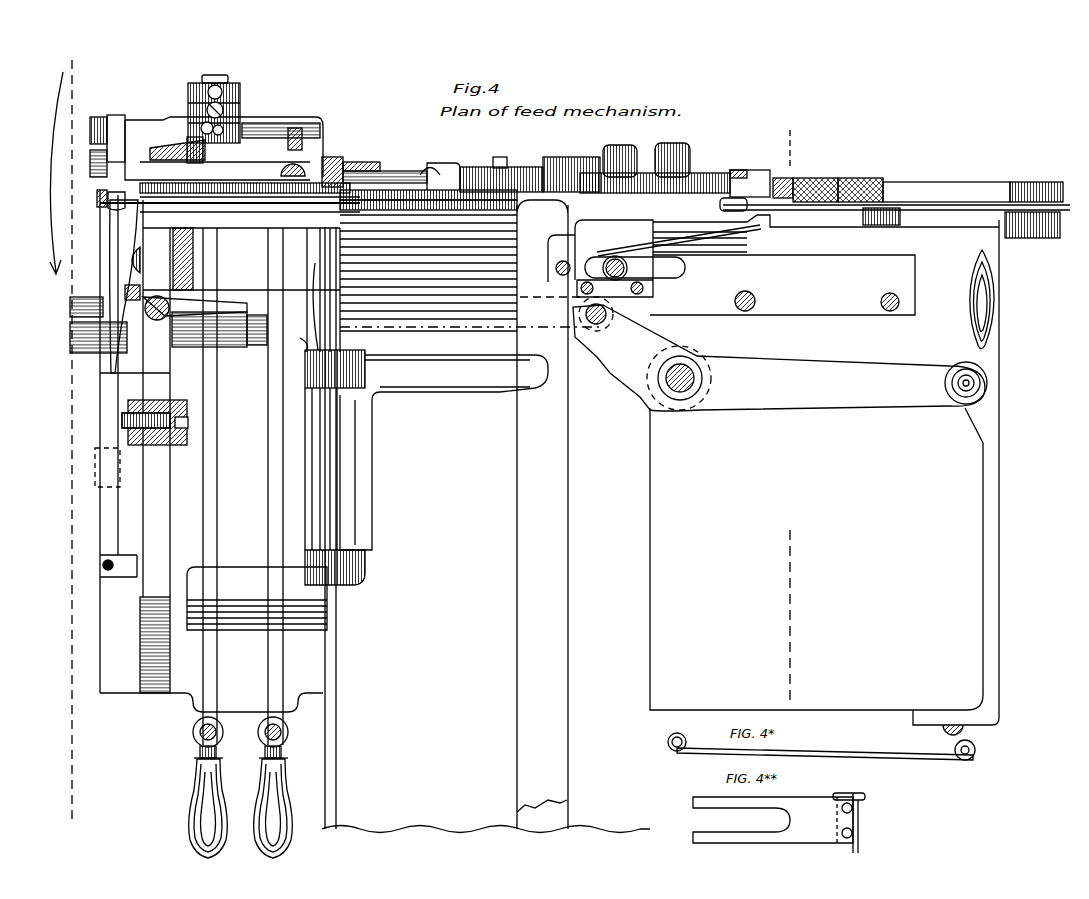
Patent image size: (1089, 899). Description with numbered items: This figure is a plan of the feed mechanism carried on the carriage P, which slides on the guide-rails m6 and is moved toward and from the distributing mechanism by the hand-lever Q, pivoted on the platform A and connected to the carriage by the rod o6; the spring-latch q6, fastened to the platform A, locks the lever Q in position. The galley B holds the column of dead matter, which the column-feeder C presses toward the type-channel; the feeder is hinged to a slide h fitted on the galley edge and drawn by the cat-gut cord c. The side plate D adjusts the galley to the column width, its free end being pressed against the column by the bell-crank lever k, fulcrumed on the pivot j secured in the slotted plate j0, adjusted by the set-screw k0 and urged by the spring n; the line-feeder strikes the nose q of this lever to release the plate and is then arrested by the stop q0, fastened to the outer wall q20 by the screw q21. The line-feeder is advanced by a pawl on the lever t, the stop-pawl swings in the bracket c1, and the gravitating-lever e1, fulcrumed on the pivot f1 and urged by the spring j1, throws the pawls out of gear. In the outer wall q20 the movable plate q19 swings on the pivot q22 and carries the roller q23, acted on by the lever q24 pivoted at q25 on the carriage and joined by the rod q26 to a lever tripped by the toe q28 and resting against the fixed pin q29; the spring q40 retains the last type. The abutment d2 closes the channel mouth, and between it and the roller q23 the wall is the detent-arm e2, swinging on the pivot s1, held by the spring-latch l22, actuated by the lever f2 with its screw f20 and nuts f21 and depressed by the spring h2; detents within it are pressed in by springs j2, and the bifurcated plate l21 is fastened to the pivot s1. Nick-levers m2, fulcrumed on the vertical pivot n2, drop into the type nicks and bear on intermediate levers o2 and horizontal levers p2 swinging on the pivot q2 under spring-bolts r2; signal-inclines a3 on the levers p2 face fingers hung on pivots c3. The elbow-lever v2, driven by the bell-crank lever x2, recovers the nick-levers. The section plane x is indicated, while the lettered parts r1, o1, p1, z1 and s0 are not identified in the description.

In FIG. 4, the bell-crank lever x2 is at (66, 429).
In FIG. 4, the pivots c3 is at (106, 128).
In FIG. 4, the inclined plane a3 is at (91, 163).
In FIG. 4, the detent-arm e2 is at (230, 160).
In FIG. 4, the slide r1 is at (281, 141).
In FIG. 4, the springs j2 is at (166, 144).
In FIG. 4, the spring-latch l22 is at (297, 128).
In FIG. 4, the pivot s1 is at (293, 166).
The pivot s1 is at (849, 787).
In FIG. 4, the screw f20 is at (215, 76).
In FIG. 4, the nuts f21 is at (230, 84).
In FIG. 4, the spring j1 is at (208, 110).
In FIG. 4, the spring q40 is at (322, 200).
In FIG. 4, the abutment d2 is at (116, 190).
In FIG. 4, the vertical pivot n2 is at (117, 201).
In FIG. 4, the carriage P is at (240, 446).
In FIG. 4, the nick-levers m2 is at (121, 286).
In FIG. 4, the elbow-lever v2 is at (141, 273).
In FIG. 4, the cylinder o1 is at (81, 307).
In FIG. 4, the intermediate levers o2 is at (92, 337).
In FIG. 4, the bar p1 is at (206, 321).
In FIG. 4, the lever f2 is at (206, 486).
In FIG. 4, the rod z1 is at (455, 437).
In FIG. 4, the spring-bolts r2 is at (159, 423).
In FIG. 4, the horizontal levers p2 is at (116, 512).
In FIG. 4, the vertical pivot q2 is at (98, 566).
In FIG. 4, the spring h2 is at (232, 787).
In FIG. 4, the galley B is at (486, 530).
In FIG. 4, the side plate D is at (542, 514).
In FIG. 4, the slide h is at (333, 406).
In FIG. 4, the column-feeder C is at (444, 452).
In FIG. 4, the set-screw k0 is at (292, 360).
In FIG. 4, the cat-gut cord c is at (302, 345).
In FIG. 4, the rod o6 is at (292, 302).
In FIG. 4, the pivot q25 is at (334, 157).
In FIG. 4, the roller q23 is at (352, 162).
The roller q23 is at (681, 735).
In FIG. 4, the lever q24 is at (385, 164).
In FIG. 4, the rod q26 is at (390, 160).
In FIG. 4, the outer wall q20 is at (370, 170).
In FIG. 4, the movable plate q19 is at (400, 172).
The movable plate q19 is at (825, 749).
In FIG. 4, the pivot f1 is at (430, 156).
In FIG. 4, the bracket c1 is at (443, 172).
In FIG. 4, the gravitating-lever e1 is at (548, 165).
In FIG. 4, the spring n is at (679, 192).
In FIG. 4, the pivot q22 is at (620, 160).
The pivot q22 is at (978, 746).
In FIG. 4, the nose q is at (782, 178).
In FIG. 4, the toe q28 is at (806, 176).
In FIG. 4, the fixed pin q29 is at (857, 173).
In FIG. 4, the stop q0 is at (932, 190).
In FIG. 4, the section plane x is at (786, 141).
In FIG. 4, the rod s0 is at (895, 210).
In FIG. 4, the screw q21 is at (881, 221).
In FIG. 4, the lever t is at (1036, 225).
In FIG. 4, the platform A is at (824, 475).
In FIG. 4, the spring-latch q6 is at (972, 400).
In FIG. 4, the guide-rails m6 is at (603, 459).
In FIG. 4, the hand-lever Q is at (779, 354).
In FIG. 4, the bell-crank lever k is at (630, 249).
In FIG. 4, the slotted plate j0 is at (664, 262).
In FIG. 4, the pivot j is at (561, 258).
The plate l21 is at (805, 818).